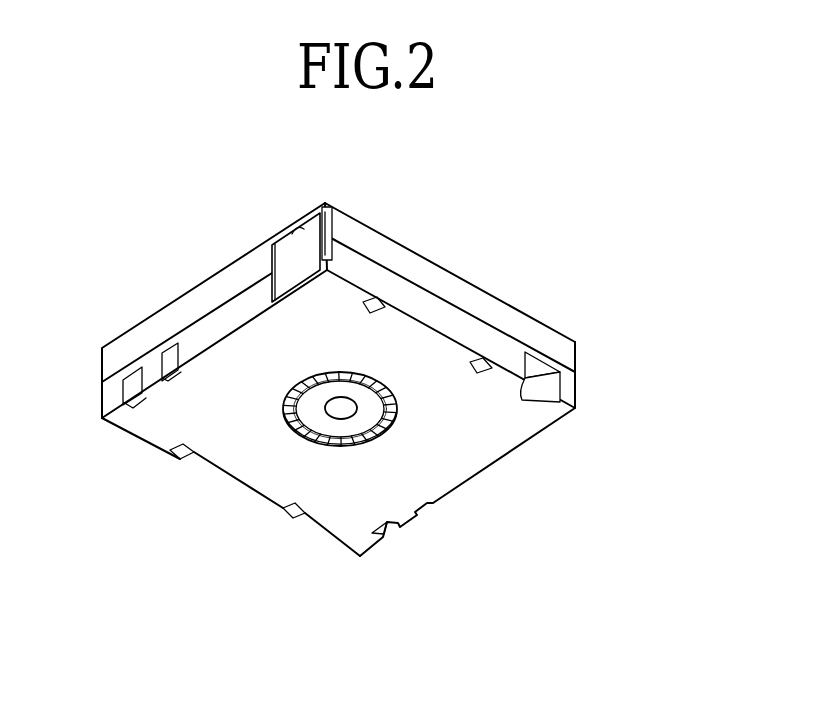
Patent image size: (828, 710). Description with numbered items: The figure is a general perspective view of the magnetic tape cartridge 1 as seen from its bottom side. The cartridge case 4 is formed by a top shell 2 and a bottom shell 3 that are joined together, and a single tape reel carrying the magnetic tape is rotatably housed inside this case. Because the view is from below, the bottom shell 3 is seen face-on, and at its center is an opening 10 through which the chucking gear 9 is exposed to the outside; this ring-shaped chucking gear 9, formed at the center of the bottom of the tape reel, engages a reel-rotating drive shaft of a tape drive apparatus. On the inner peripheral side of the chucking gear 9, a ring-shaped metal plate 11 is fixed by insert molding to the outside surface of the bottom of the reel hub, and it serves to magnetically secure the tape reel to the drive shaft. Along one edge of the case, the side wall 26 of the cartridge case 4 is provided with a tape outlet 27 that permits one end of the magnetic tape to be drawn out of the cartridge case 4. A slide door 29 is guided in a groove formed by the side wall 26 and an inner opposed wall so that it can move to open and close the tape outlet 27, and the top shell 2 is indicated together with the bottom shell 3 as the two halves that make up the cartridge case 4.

The magnetic tape cartridge 1 is at (112, 297).
The top shell 2 is at (576, 343).
The bottom shell 3 is at (576, 387).
The cartridge case 4 is at (638, 345).
The chucking gear 9 is at (311, 447).
The opening 10 is at (398, 422).
The ring-shaped metal plate 11 is at (366, 407).
The side wall 26 is at (236, 268).
The tape outlet 27 is at (322, 206).
The slide door 29 is at (305, 248).